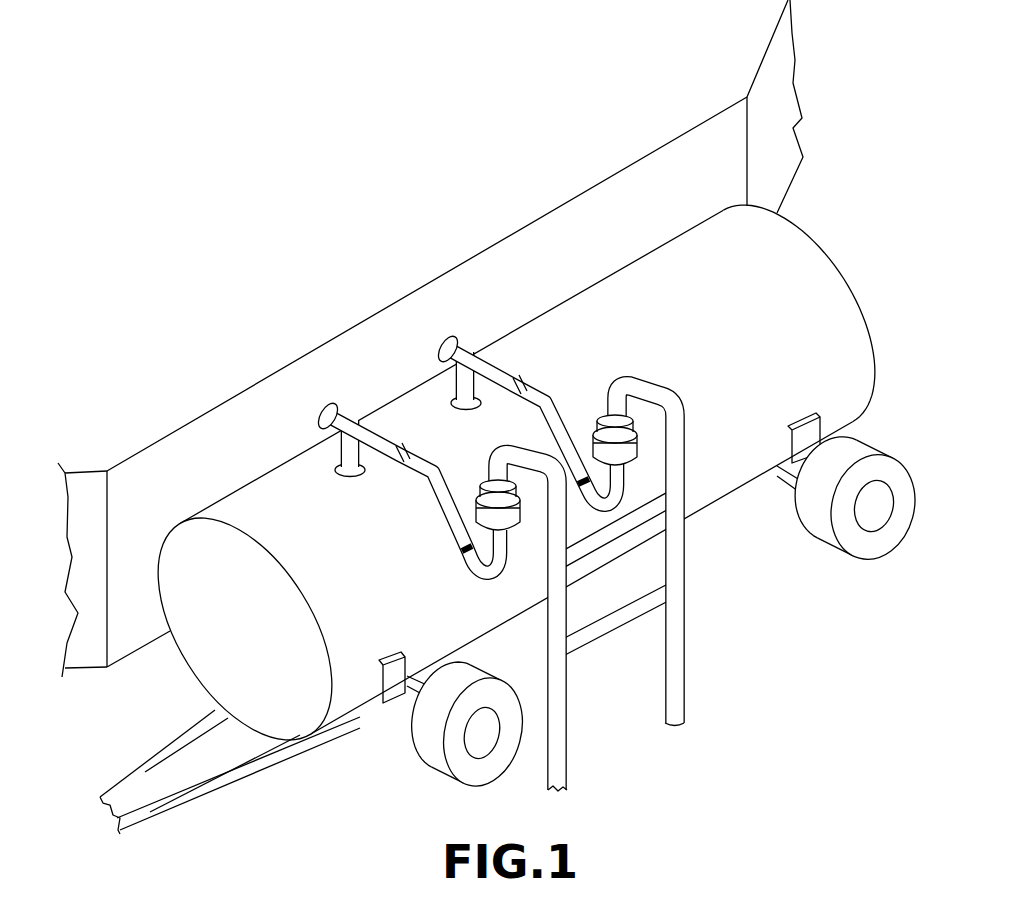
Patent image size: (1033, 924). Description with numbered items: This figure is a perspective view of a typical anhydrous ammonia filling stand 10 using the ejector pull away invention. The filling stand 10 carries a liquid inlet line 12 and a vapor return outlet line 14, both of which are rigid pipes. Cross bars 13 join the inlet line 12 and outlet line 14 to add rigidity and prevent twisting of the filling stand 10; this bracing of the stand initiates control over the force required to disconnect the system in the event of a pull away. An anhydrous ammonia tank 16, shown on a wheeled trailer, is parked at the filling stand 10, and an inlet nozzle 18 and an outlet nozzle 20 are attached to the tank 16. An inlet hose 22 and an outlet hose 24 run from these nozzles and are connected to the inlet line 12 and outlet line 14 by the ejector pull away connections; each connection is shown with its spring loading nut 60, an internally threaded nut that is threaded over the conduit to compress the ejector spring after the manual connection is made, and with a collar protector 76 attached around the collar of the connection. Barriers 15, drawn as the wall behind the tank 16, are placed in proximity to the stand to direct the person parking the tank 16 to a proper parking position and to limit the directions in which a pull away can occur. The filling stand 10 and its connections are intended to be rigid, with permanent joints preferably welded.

The filling stand 10 is at (790, 591).
The liquid inlet line 12 is at (677, 631).
The cross bars 13 is at (597, 542).
The vapor return outlet line 14 is at (558, 622).
The barriers 15 is at (318, 350).
The anhydrous ammonia tank 16 is at (752, 293).
The inlet nozzle 18 is at (473, 357).
The outlet nozzle 20 is at (346, 455).
The inlet hose 22 is at (535, 385).
The outlet hose 24 is at (442, 503).
The spring loading nut 60 is at (625, 428).
The collar protector 76 is at (633, 448).